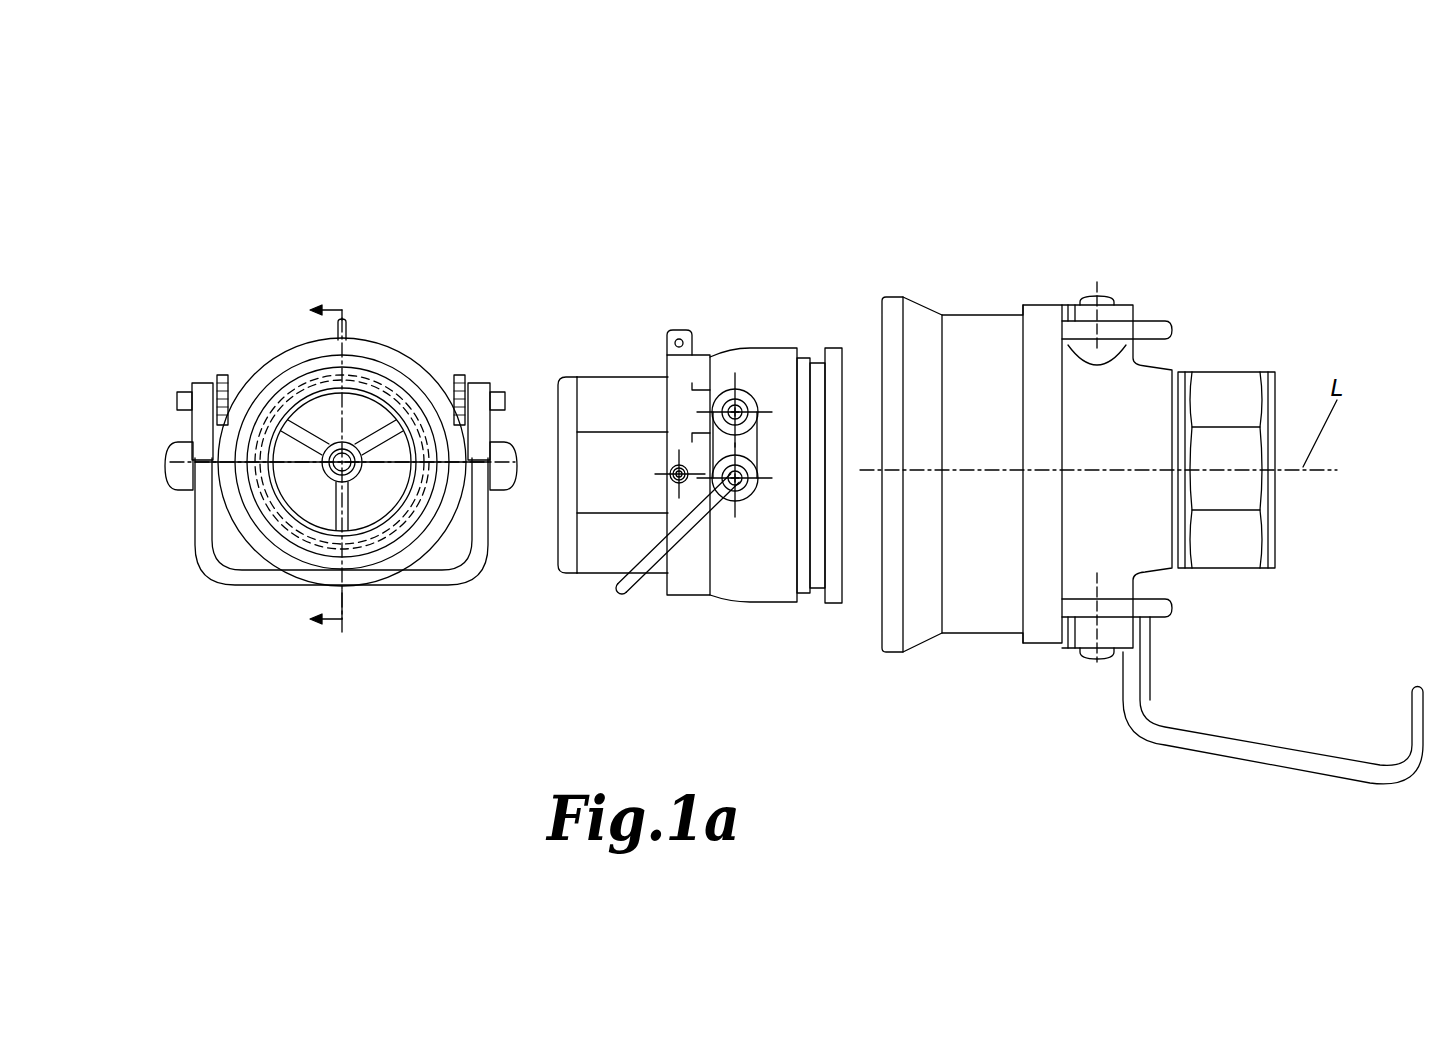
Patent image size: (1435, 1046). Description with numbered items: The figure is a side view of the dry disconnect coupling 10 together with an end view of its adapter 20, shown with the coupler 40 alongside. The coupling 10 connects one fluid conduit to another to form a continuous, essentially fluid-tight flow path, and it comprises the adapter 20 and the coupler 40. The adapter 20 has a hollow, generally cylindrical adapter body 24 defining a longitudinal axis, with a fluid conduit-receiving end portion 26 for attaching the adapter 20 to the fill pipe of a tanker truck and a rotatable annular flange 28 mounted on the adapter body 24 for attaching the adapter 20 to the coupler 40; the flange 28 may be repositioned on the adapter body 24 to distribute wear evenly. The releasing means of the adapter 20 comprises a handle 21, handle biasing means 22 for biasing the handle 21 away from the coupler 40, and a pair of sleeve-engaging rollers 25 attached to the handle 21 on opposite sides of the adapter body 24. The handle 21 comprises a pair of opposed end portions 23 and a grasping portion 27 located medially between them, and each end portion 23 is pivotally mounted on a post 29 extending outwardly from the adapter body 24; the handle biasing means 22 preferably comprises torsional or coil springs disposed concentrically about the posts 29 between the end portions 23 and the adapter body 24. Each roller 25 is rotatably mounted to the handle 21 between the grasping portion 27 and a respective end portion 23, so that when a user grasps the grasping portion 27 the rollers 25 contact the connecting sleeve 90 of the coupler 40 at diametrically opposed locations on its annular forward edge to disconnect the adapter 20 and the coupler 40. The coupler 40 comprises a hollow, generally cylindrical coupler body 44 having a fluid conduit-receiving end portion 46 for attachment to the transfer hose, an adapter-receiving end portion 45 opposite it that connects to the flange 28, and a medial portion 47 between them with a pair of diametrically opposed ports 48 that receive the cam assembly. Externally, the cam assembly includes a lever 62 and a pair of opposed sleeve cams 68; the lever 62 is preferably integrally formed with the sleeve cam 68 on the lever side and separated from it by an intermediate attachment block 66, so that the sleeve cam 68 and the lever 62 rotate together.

The dry disconnect coupling 10 is at (846, 195).
The adapter 20 is at (693, 596).
The handle 21 is at (213, 581).
The handle biasing means 22 is at (222, 385).
The end portions 23 is at (200, 392).
The adapter body 24 is at (742, 584).
The sleeve-engaging rollers 25 is at (183, 489).
The fluid conduit-receiving end portion 26 is at (602, 388).
The grasping portion 27 is at (403, 581).
The rotatable annular flange 28 is at (833, 357).
The post 29 is at (237, 383).
The coupler 40 is at (1078, 235).
The coupler body 44 is at (1109, 434).
The adapter-receiving end portion 45 is at (923, 592).
The fluid conduit-receiving end portion 46 is at (1243, 388).
The medial portion 47 is at (1090, 520).
The ports 48 is at (1108, 348).
The lever 62 is at (1245, 760).
The attachment block 66 is at (1180, 648).
The sleeve cams 68 is at (1153, 329).
The connecting sleeve 90 is at (927, 300).